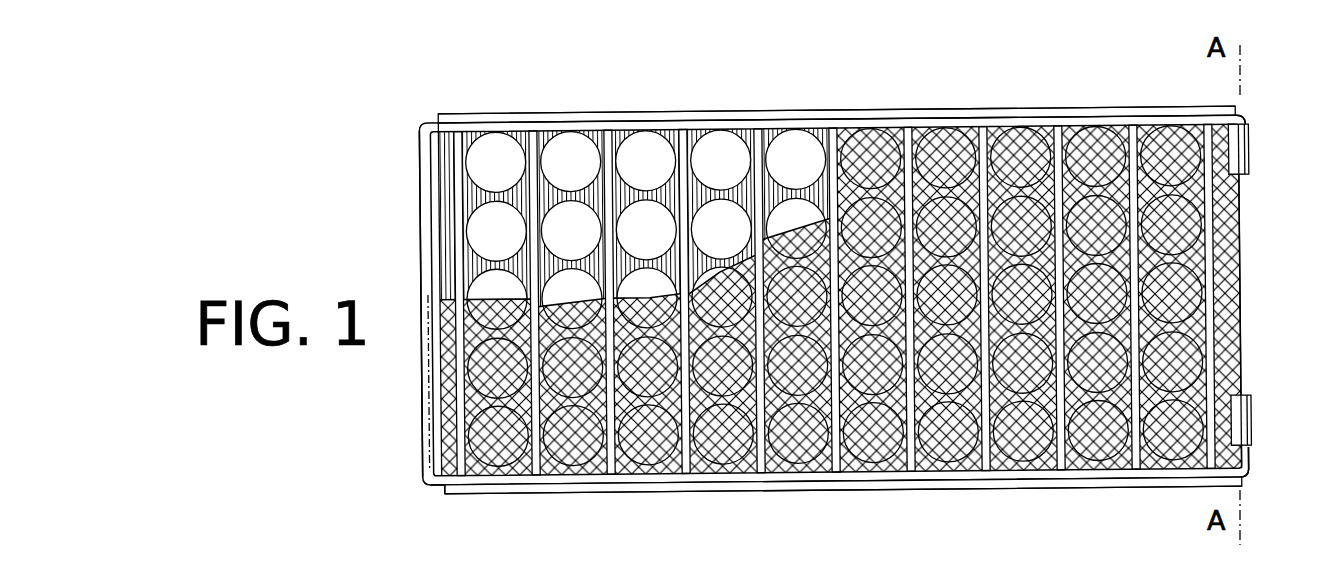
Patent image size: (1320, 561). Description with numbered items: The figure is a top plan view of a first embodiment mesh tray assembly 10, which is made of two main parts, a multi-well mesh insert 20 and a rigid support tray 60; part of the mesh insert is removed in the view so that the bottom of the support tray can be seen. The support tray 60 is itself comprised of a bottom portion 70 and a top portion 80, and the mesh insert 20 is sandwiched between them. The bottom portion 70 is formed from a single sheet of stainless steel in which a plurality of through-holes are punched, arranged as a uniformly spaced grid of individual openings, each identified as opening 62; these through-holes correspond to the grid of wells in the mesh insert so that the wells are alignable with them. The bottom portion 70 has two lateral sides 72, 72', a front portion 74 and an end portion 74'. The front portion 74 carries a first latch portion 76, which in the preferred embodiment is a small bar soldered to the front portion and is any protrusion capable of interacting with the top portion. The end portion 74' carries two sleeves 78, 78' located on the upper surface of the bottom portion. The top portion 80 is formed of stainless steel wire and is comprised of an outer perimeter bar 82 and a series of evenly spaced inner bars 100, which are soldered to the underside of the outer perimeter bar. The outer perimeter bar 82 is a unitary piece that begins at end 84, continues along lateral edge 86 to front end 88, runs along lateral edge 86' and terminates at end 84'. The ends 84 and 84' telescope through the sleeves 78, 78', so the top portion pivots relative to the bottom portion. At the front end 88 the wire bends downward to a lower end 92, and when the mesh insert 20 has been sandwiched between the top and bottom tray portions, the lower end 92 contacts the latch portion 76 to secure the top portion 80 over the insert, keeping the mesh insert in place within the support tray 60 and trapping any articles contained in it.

The mesh tray assembly 10 is at (842, 287).
The mesh insert 20 is at (856, 267).
The support tray 60 is at (842, 294).
The opening 62 is at (583, 168).
The bottom portion 70 is at (837, 84).
The lateral side 72 is at (844, 511).
The lateral side 72' is at (837, 90).
The front portion 74 is at (472, 512).
The end portion 74' is at (1265, 296).
The first latch portion 76 is at (437, 285).
The sleeve 78 is at (1259, 405).
The sleeve 78' is at (1266, 144).
The top portion 80 is at (425, 126).
The outer perimeter bar 82 is at (657, 478).
The end 84 is at (1272, 466).
The end 84' is at (1267, 101).
The lateral edge 86 is at (843, 512).
The lateral edge 86' is at (837, 87).
The front end 88 is at (427, 402).
The lower end 92 is at (425, 177).
The inner bars 100 is at (533, 137).